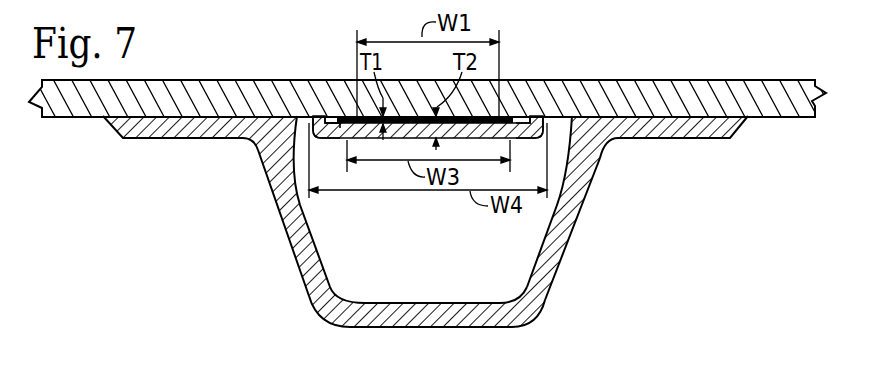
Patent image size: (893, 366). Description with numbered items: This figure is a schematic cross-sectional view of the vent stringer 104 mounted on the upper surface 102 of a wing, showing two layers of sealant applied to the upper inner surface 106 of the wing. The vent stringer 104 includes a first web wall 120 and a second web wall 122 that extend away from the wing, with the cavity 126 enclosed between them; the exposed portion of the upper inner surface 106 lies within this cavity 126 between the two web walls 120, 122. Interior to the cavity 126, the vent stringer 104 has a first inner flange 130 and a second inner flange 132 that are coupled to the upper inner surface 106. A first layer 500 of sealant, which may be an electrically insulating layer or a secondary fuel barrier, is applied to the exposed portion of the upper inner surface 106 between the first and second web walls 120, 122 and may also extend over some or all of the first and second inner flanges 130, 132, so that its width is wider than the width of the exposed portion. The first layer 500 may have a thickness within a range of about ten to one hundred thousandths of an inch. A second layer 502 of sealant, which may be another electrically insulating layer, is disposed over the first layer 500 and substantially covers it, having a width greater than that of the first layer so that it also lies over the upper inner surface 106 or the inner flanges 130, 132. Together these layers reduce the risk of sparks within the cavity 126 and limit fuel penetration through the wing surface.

The upper surface 102 is at (735, 85).
The vent stringer 104 is at (677, 264).
The upper inner surface 106 is at (778, 120).
The first web wall 120 is at (295, 233).
The second web wall 122 is at (564, 236).
The cavity 126 is at (441, 299).
The first inner flange 130 is at (323, 127).
The second inner flange 132 is at (533, 128).
The first layer of sealant 500 is at (400, 118).
The second layer of sealant 502 is at (334, 126).